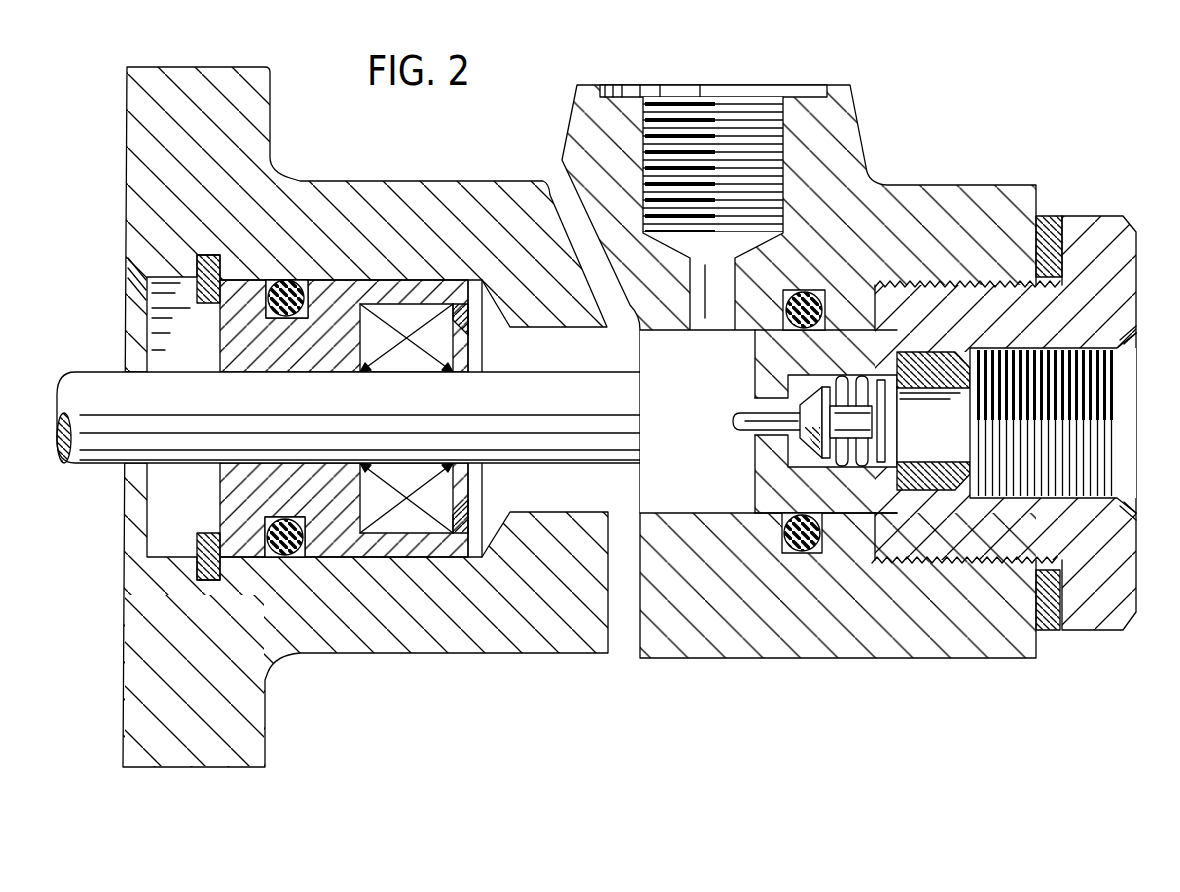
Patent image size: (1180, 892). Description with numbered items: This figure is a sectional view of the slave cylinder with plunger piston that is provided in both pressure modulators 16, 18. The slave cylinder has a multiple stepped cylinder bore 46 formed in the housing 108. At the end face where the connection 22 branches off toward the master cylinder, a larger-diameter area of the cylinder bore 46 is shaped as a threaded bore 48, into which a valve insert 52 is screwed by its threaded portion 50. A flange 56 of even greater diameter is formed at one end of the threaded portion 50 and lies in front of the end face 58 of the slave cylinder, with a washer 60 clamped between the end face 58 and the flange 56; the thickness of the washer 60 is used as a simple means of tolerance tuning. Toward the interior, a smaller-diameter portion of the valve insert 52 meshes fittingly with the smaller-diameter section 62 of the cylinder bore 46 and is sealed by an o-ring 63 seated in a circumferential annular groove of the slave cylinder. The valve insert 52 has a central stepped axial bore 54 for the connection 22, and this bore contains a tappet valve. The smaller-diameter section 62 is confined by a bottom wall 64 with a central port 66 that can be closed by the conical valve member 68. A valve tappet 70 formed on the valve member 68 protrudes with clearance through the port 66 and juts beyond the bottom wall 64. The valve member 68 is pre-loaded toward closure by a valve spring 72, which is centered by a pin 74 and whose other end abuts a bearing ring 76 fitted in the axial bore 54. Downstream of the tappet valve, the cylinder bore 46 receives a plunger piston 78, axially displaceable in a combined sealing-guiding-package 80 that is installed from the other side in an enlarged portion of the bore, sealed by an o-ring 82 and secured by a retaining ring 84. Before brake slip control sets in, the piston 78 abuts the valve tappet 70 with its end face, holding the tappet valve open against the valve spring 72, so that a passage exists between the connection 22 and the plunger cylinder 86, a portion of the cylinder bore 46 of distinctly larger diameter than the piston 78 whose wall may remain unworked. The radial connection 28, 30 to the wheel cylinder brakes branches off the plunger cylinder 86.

The pressure modulator 16 is at (871, 375).
The pressure modulator 18 is at (871, 375).
The connection 22 is at (1137, 392).
The radial connection 28 is at (713, 189).
The radial connection 30 is at (732, 117).
The cylinder bore 46 is at (152, 318).
The threaded bore 48 is at (962, 568).
The threaded portion 50 is at (992, 532).
The valve insert 52 is at (967, 405).
The axial bore 54 is at (843, 465).
The flange 56 is at (1122, 240).
The end face 58 is at (1042, 215).
The washer 60 is at (1058, 225).
The smaller-diameter section 62 is at (835, 338).
The o-ring 63 is at (807, 292).
The bottom wall 64 is at (770, 455).
The port 66 is at (753, 400).
The valve member 68 is at (770, 515).
The valve tappet 70 is at (712, 415).
The valve spring 72 is at (872, 383).
The pin 74 is at (862, 421).
The bearing ring 76 is at (952, 362).
The plunger piston 78 is at (100, 437).
The sealing-guiding-package 80 is at (328, 507).
The o-ring 82 is at (290, 280).
The retaining ring 84 is at (200, 267).
The plunger cylinder 86 is at (552, 338).
The housing 108 is at (344, 417).